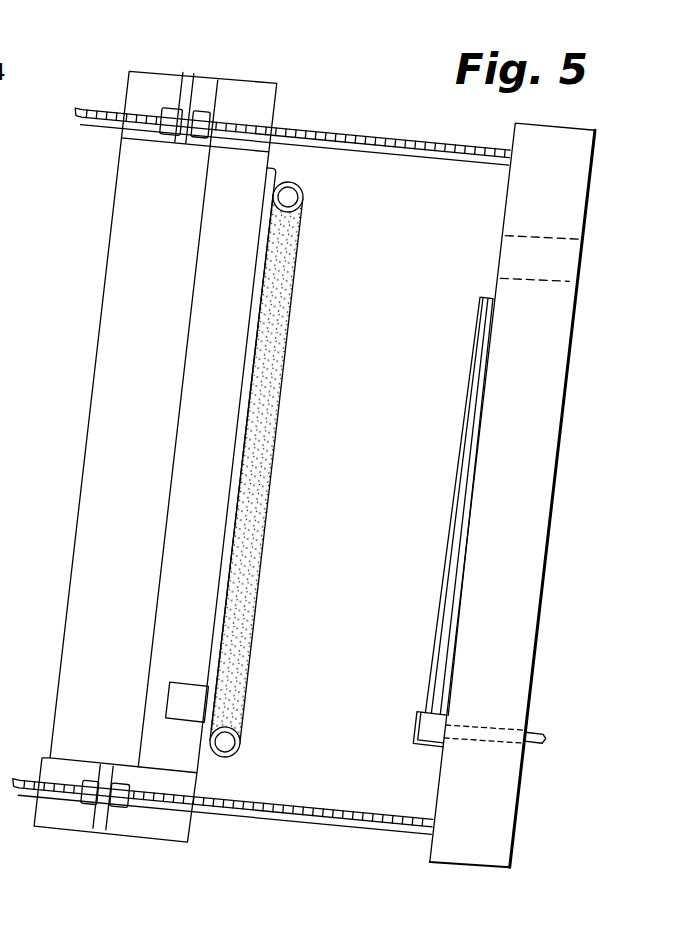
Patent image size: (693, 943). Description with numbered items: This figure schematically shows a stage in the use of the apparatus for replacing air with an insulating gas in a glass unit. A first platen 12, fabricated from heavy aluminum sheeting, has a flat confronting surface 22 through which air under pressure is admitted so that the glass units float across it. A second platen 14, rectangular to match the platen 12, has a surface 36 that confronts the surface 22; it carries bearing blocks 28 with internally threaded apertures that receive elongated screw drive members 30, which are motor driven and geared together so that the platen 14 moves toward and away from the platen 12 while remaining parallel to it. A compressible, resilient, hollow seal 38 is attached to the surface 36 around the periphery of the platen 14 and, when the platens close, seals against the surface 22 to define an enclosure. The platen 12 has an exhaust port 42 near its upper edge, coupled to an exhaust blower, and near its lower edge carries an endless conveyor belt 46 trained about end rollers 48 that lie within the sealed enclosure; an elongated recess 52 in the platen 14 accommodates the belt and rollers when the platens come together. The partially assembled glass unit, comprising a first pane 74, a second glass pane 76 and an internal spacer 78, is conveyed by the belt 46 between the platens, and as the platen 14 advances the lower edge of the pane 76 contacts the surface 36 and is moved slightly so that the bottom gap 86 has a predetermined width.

The platen 12 is at (488, 840).
The second platen 14 is at (203, 337).
The confronting surface 22 is at (495, 183).
The bearing block 28 is at (188, 96).
The elongated screw drive member 30 is at (285, 822).
The platen surface 36 is at (255, 424).
The compressible resilient seal 38 is at (247, 555).
The exhaust port 42 is at (590, 268).
The endless conveyor belt 46 is at (430, 748).
The end roller 48 is at (430, 723).
The elongated recess 52 is at (173, 702).
The first pane 74 is at (457, 652).
The second glass pane 76 is at (440, 592).
The internal spacer 78 is at (455, 553).
The bottom gap 86 is at (437, 699).